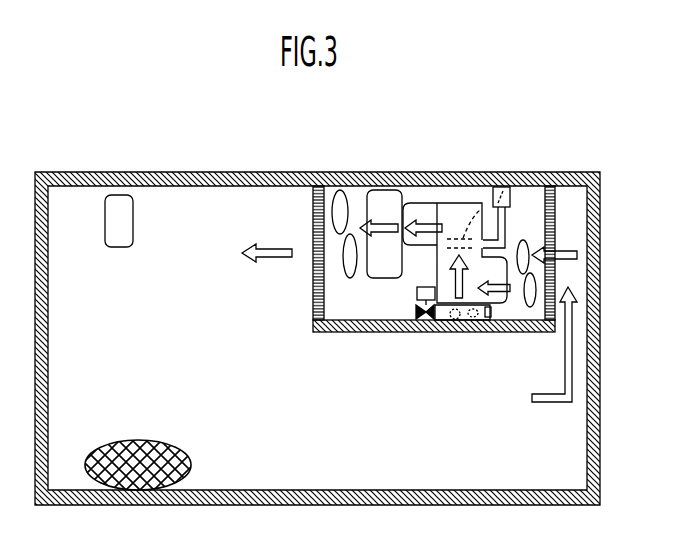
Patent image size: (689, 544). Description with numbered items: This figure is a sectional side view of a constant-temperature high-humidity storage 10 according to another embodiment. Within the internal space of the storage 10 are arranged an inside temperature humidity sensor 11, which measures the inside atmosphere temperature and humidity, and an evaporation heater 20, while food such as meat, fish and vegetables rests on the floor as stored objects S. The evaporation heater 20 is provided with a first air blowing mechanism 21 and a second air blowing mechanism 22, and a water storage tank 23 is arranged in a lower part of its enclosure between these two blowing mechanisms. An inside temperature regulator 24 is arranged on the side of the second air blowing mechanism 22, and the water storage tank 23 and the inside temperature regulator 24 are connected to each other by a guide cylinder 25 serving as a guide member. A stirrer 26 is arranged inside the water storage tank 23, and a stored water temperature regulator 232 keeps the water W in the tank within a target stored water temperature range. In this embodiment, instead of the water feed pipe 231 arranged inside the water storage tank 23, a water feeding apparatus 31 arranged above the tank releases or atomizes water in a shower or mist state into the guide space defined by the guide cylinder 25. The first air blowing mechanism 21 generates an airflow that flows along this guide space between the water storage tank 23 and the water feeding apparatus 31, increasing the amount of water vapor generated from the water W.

The constant-temperature high-humidity storage 10 is at (211, 161).
The inside temperature humidity sensor 11 is at (134, 215).
The evaporation heater 20 is at (453, 158).
The first air blowing mechanism 21 is at (531, 276).
The second air blowing mechanism 22 is at (342, 258).
The water storage tank 23 is at (487, 379).
The inside temperature regulator 24 is at (368, 277).
The guide cylinder 25 is at (437, 273).
The stirrer 26 is at (423, 320).
The water feeding apparatus 31 is at (537, 172).
The water feed pipe 231 is at (458, 321).
The stored water temperature regulator 232 is at (473, 320).
The water W is at (437, 320).
The stored objects S is at (146, 442).